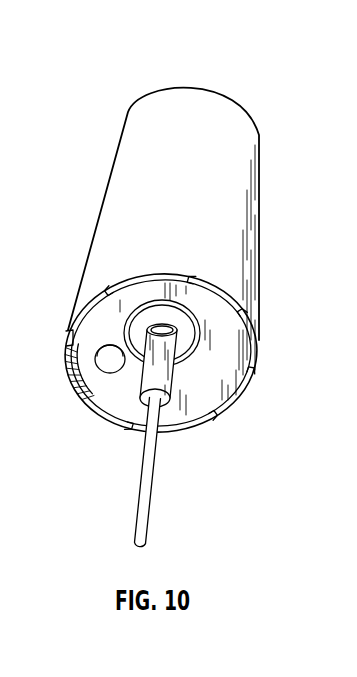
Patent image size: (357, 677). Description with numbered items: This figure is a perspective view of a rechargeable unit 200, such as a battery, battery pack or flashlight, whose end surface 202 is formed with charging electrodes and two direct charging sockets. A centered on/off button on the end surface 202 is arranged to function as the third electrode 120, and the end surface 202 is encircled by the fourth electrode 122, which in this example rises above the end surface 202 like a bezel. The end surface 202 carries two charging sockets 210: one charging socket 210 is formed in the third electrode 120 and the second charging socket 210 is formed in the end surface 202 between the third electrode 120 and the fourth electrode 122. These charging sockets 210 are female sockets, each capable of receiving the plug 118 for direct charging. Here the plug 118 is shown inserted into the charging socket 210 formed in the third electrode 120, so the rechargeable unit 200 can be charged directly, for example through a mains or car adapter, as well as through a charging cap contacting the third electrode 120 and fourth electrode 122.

The rechargeable unit 200 is at (172, 58).
The end surface 202 is at (223, 310).
The fourth electrode 122 is at (68, 374).
The plug 118 is at (183, 350).
The third electrode 120 is at (163, 383).
The charging socket 210 is at (163, 330).